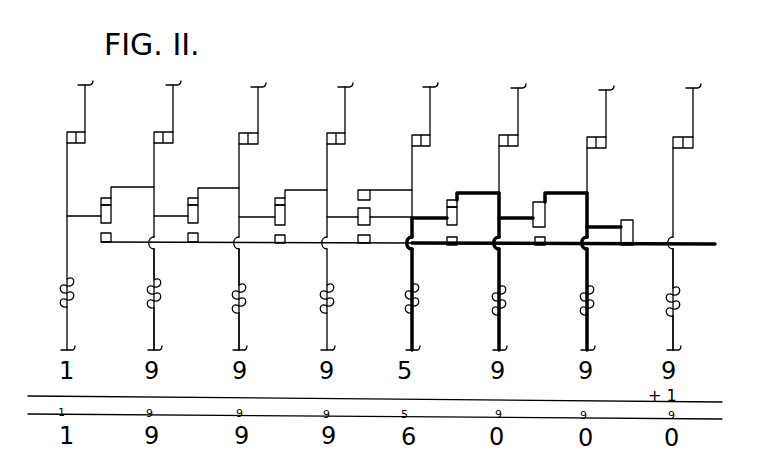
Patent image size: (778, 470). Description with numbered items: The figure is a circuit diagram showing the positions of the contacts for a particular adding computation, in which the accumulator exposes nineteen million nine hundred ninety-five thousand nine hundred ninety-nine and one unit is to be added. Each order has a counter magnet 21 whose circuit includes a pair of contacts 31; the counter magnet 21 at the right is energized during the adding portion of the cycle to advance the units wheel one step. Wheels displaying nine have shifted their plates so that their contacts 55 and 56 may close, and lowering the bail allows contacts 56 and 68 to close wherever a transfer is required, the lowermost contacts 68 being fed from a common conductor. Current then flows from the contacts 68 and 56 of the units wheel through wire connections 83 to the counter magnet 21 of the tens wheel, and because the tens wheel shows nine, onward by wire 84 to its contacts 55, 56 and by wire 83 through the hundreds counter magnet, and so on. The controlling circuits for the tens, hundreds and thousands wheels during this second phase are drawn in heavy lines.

The contacts 31 is at (165, 140).
The contacts 55 is at (106, 198).
The contacts 56 is at (111, 218).
The wire 84 is at (128, 188).
The lowermost contacts 68 is at (104, 243).
The counter magnet 21 is at (146, 296).
The wire connections 83 is at (238, 267).